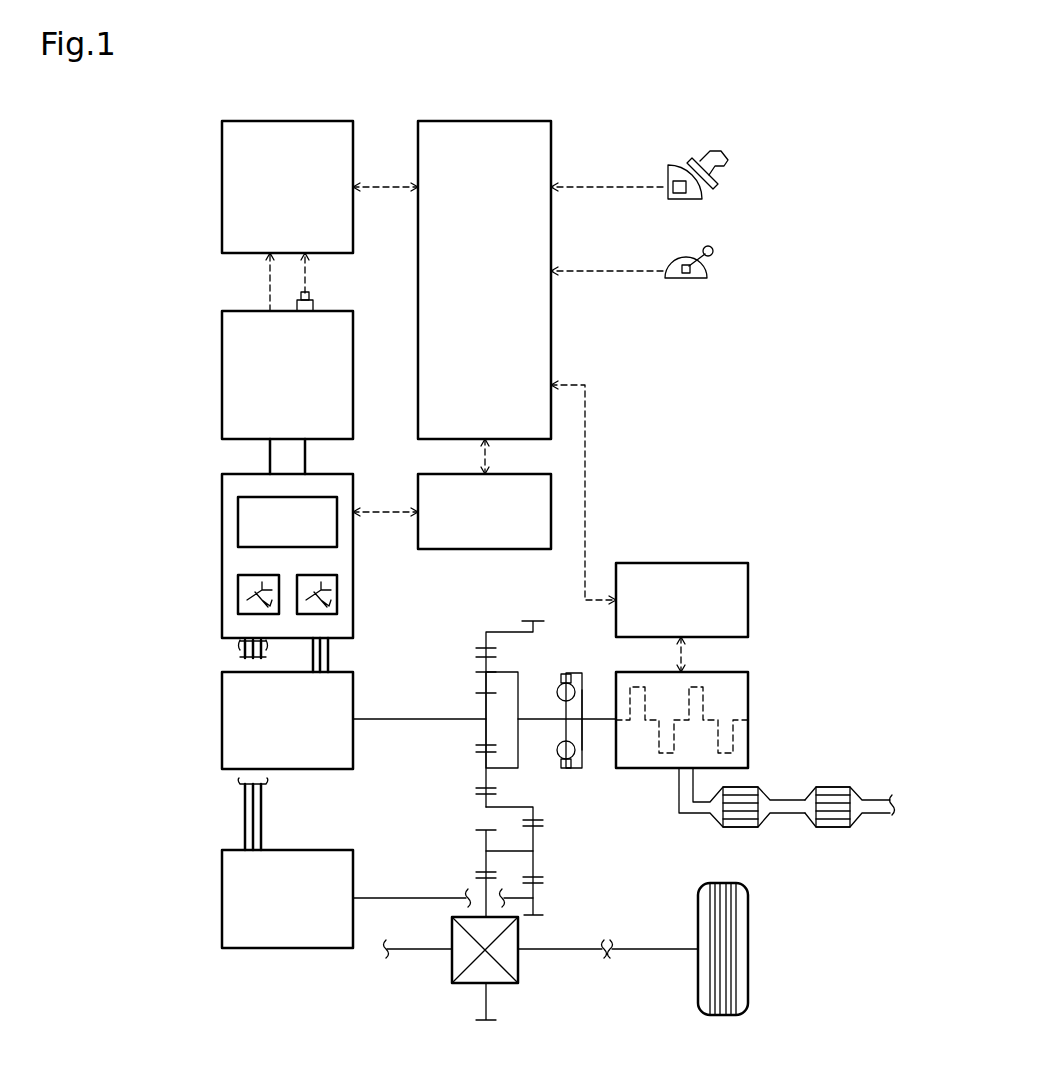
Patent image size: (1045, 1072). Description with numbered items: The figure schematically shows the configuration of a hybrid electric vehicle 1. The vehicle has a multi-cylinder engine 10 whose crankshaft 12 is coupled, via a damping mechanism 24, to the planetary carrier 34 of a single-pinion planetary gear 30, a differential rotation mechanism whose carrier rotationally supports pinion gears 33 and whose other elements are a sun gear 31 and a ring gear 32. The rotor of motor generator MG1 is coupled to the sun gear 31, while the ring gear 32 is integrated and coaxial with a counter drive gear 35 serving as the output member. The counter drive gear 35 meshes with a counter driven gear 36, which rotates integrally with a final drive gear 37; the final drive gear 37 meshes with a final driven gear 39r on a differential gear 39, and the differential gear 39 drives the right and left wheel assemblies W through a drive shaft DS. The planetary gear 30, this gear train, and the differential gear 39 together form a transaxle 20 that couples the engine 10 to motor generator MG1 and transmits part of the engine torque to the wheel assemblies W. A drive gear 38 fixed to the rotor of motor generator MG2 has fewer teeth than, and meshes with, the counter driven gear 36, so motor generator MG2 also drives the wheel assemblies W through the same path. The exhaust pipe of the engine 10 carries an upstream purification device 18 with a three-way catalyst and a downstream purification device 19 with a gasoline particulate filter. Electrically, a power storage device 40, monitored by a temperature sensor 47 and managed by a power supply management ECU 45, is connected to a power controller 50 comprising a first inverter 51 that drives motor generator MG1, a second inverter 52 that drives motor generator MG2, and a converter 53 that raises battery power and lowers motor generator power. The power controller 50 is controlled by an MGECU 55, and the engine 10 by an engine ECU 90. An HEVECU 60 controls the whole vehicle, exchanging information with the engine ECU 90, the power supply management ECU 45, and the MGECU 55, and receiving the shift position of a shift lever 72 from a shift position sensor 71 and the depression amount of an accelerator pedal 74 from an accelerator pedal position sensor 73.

The hybrid electric vehicle 1 is at (184, 813).
The engine 10 is at (713, 697).
The crankshaft 12 is at (712, 710).
The upstream purification device 18 is at (762, 794).
The downstream purification device 19 is at (852, 794).
The transaxle 20 is at (542, 696).
The damping mechanism 24 is at (586, 768).
The planetary gear 30 is at (498, 686).
The sun gear 31 is at (486, 705).
The ring gear 32 is at (486, 650).
The pinion gears 33 is at (486, 780).
The planetary carrier 34 is at (503, 672).
The counter drive gear 35 is at (532, 815).
The counter driven gear 36 is at (538, 841).
The final drive gear 37 is at (484, 839).
The drive gear 38 is at (538, 893).
The differential gear 39 is at (522, 985).
The final driven gear 39r is at (482, 1001).
The power storage device 40 is at (222, 325).
The power supply management ECU 45 is at (288, 121).
The temperature sensor 47 is at (312, 297).
The power controller 50 is at (256, 547).
The first inverter 51 is at (317, 575).
The second inverter 52 is at (238, 584).
The converter 53 is at (238, 505).
The MGECU 55 is at (487, 553).
The HEVECU 60 is at (483, 121).
The shift position sensor 71 is at (711, 268).
The shift lever 72 is at (714, 239).
The accelerator pedal position sensor 73 is at (707, 204).
The accelerator pedal 74 is at (691, 159).
The engine ECU 90 is at (748, 601).
The motor generator MG1 is at (305, 771).
The motor generator MG2 is at (285, 950).
The wheel assemblies W is at (748, 945).
The drive shaft DS is at (653, 950).